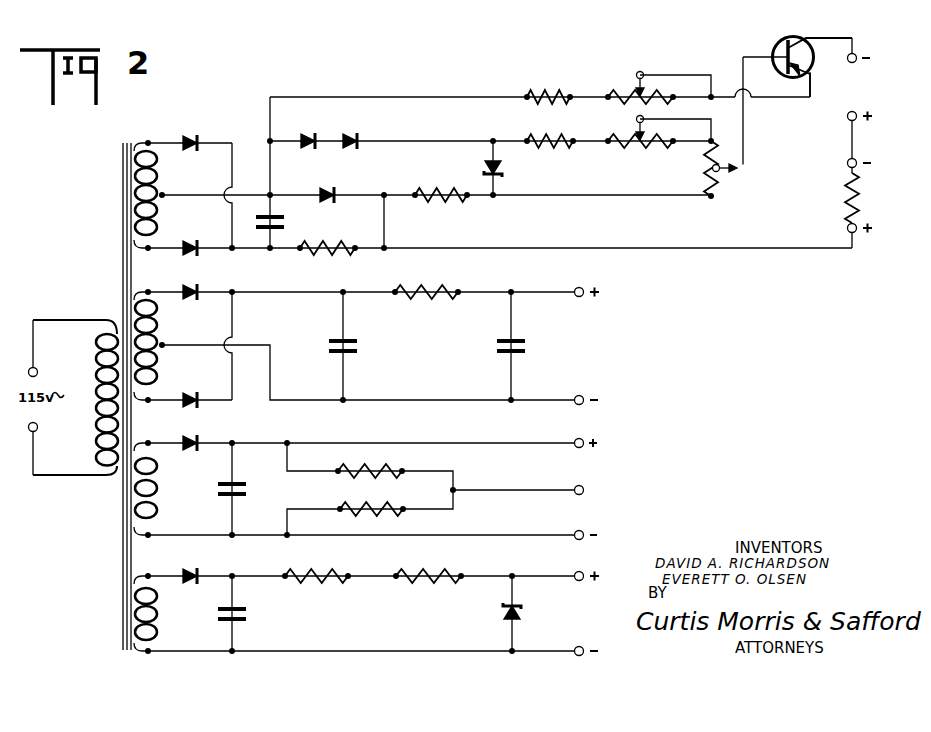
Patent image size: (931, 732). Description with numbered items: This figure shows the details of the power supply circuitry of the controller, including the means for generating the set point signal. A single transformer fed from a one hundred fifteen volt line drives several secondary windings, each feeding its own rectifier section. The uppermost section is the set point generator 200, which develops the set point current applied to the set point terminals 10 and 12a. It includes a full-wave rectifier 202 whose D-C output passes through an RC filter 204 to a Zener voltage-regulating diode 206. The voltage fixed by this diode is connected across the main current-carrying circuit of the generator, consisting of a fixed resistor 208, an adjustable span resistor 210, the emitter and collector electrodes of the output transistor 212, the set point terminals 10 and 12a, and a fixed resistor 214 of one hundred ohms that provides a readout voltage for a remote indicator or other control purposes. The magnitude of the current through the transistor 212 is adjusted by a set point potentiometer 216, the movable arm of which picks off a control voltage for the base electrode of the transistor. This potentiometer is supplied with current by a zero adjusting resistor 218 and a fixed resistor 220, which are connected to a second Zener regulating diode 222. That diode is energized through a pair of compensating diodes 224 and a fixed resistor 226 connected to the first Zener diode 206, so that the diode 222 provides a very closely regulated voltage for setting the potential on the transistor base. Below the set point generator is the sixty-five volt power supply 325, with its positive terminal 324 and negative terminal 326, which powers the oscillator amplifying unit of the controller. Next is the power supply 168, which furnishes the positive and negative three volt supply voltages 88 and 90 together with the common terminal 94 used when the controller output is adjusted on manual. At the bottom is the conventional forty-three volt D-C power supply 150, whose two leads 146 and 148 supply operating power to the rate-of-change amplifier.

The set point generator 200 is at (390, 82).
The full-wave rectifier 202 is at (206, 189).
The RC filter 204 is at (341, 239).
The Zener voltage-regulating diode 206 is at (335, 192).
The fixed resistor 208 is at (548, 90).
The adjustable span resistor 210 is at (623, 90).
The output transistor 212 is at (777, 38).
The fixed resistor 214 is at (846, 195).
The set point potentiometer 216 is at (722, 193).
The zero adjusting resistor 218 is at (633, 146).
The fixed resistor 220 is at (549, 146).
The second Zener regulating diode 222 is at (484, 167).
The compensating diodes 224 is at (412, 132).
The fixed resistor 226 is at (447, 203).
The set point terminal 10 is at (858, 53).
The set point terminal 12a is at (847, 118).
The positive terminal 324 is at (577, 287).
The 65 volt power supply 325 is at (419, 335).
The negative terminal 326 is at (577, 395).
The positive supply voltage 88 is at (576, 438).
The common terminal 94 is at (576, 485).
The negative supply voltage 90 is at (576, 530).
The power supply 168 is at (421, 478).
The lead 146 is at (576, 571).
The lead 148 is at (576, 646).
The 43 volt D-C power supply 150 is at (370, 601).